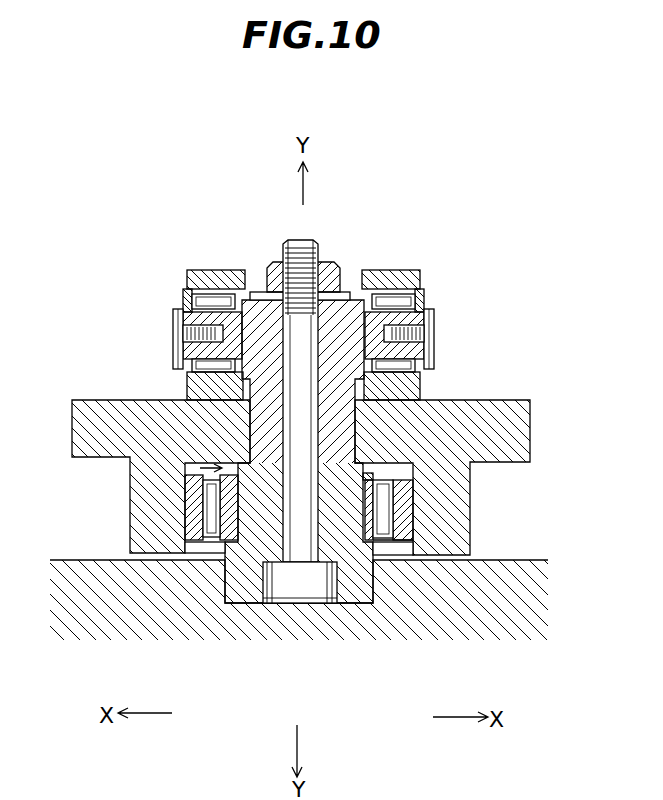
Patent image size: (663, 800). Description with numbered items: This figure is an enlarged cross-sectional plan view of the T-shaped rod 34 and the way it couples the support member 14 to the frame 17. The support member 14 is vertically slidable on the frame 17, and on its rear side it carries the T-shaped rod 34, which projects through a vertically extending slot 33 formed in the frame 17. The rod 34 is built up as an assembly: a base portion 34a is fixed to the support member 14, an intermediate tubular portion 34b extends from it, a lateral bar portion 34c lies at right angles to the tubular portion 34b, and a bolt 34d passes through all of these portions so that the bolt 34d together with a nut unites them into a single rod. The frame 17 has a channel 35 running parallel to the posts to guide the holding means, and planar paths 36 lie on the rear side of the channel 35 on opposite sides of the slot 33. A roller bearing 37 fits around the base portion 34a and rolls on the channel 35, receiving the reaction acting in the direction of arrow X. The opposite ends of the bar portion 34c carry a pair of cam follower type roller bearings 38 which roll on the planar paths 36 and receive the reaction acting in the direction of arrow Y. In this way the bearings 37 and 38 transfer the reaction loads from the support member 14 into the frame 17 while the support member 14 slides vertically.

The support member 14 is at (62, 560).
The frame 17 is at (96, 400).
The slot 33 is at (256, 432).
The T-shaped rod 34 is at (200, 468).
The base portion 34a is at (352, 600).
The intermediate tubular portion 34b is at (340, 433).
The lateral bar portion 34c is at (358, 292).
The bolt 34d is at (293, 241).
The channel 35 is at (413, 537).
The planar paths 36 is at (210, 395).
The bearing 37 is at (412, 508).
The bearings 38 is at (195, 270).